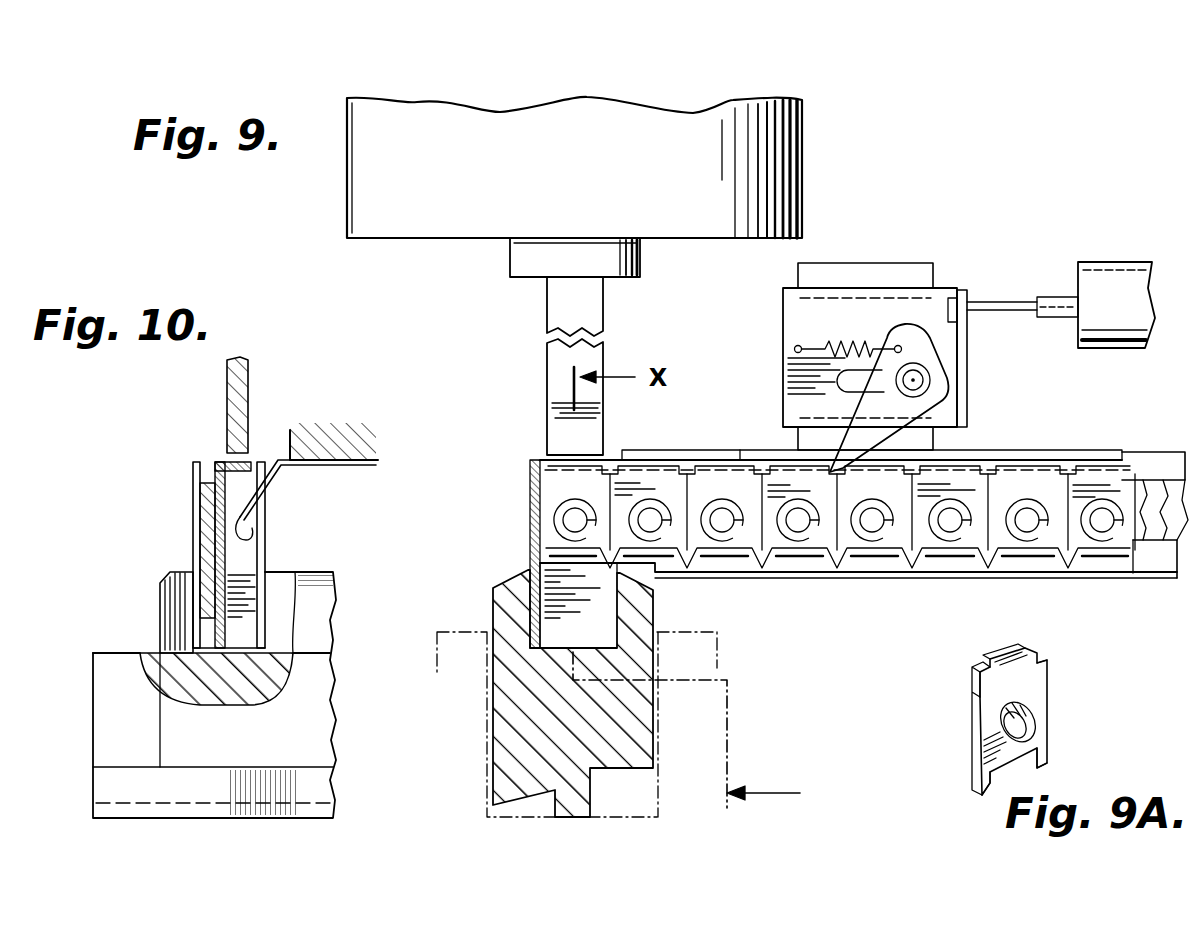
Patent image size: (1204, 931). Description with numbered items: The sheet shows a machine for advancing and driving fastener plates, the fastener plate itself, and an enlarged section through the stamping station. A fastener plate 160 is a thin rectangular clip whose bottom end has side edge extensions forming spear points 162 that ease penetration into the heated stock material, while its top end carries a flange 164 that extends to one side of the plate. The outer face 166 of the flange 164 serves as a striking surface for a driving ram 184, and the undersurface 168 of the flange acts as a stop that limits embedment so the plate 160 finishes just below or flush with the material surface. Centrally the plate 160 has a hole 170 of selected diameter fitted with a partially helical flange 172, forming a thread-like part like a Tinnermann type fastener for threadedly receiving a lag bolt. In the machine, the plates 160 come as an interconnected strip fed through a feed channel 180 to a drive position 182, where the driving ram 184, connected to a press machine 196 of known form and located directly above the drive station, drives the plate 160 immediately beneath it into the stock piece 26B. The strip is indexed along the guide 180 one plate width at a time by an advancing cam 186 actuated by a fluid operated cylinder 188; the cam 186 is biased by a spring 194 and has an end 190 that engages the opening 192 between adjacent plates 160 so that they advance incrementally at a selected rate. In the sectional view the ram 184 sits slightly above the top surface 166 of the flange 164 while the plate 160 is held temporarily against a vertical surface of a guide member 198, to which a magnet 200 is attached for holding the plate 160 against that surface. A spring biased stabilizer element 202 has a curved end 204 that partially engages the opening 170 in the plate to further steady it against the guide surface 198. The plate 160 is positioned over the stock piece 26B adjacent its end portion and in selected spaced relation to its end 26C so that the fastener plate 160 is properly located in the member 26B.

In FIG. 9, the press machine 196 is at (745, 133).
In FIG. 9, the fluid operated cylinder 188 is at (1118, 282).
In FIG. 9, the driving ram 184 is at (552, 367).
In FIG. 10, the driving ram 184 is at (232, 392).
In FIG. 9, the spring 194 is at (843, 346).
In FIG. 9, the advancing cam 186 is at (920, 350).
In FIG. 9, the cam end 190 is at (845, 450).
In FIG. 9, the opening 192 is at (990, 468).
In FIG. 9, the feed channel 180 is at (1150, 462).
In FIG. 9, the drive position 182 is at (535, 467).
In FIG. 9, the stock piece 26B is at (507, 640).
In FIG. 10, the stock piece 26B is at (312, 733).
In FIG. 10, the end 26C is at (92, 690).
In FIG. 9, the fastener plate 160 is at (706, 542).
In FIG. 9A, the fastener plate 160 is at (1040, 690).
In FIG. 10, the fastener plate 160 is at (253, 460).
In FIG. 9A, the spear points 162 is at (1047, 763).
In FIG. 9A, the flange 164 is at (1047, 666).
In FIG. 9A, the outer face 166 is at (1010, 655).
In FIG. 9A, the undersurface 168 is at (975, 697).
In FIG. 9A, the hole 170 is at (1002, 728).
In FIG. 9A, the partially helical flange 172 is at (1032, 716).
In FIG. 10, the guide member 198 is at (190, 466).
In FIG. 10, the magnet 200 is at (205, 553).
In FIG. 10, the spring biased stabilizer element 202 is at (280, 485).
In FIG. 10, the curved end 204 is at (247, 529).